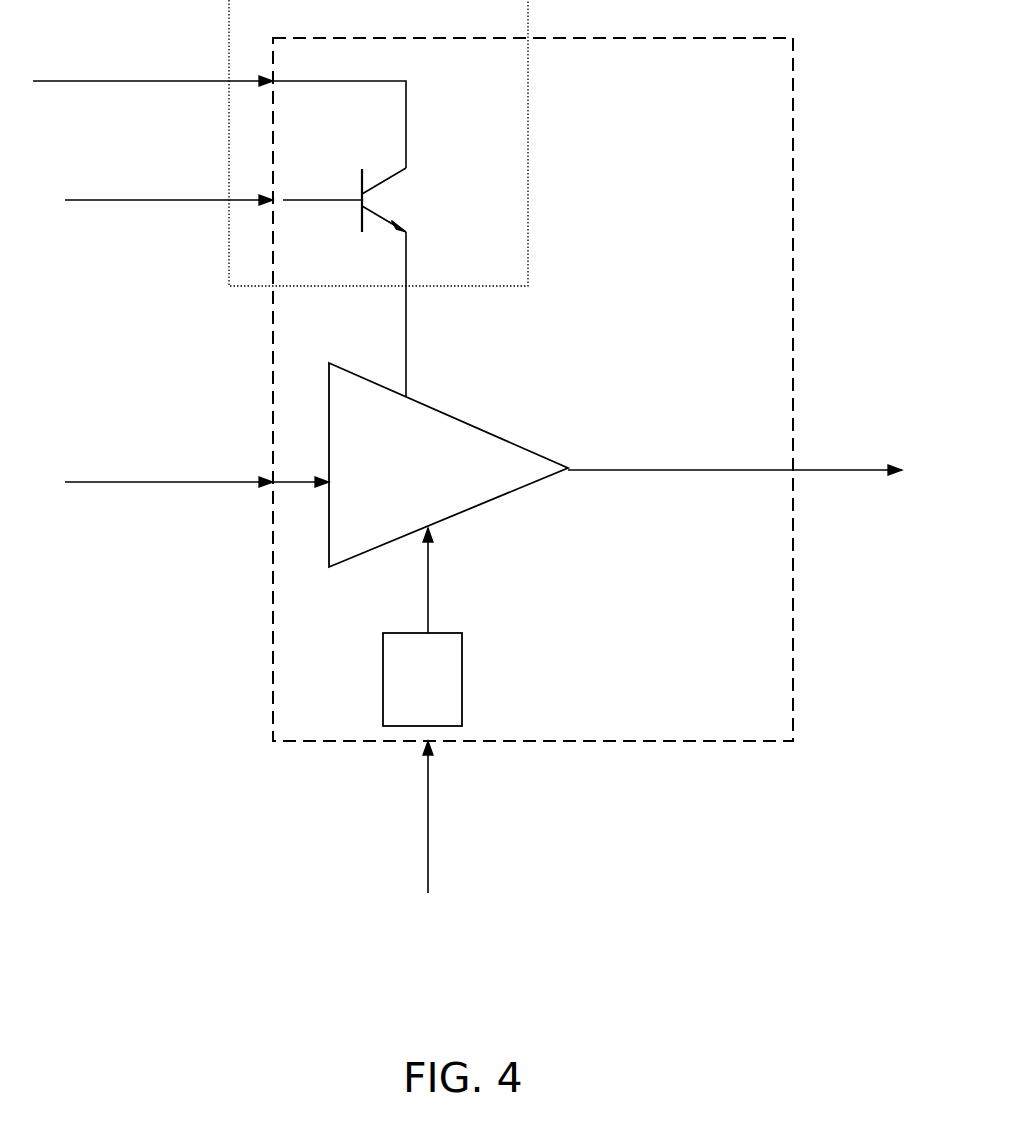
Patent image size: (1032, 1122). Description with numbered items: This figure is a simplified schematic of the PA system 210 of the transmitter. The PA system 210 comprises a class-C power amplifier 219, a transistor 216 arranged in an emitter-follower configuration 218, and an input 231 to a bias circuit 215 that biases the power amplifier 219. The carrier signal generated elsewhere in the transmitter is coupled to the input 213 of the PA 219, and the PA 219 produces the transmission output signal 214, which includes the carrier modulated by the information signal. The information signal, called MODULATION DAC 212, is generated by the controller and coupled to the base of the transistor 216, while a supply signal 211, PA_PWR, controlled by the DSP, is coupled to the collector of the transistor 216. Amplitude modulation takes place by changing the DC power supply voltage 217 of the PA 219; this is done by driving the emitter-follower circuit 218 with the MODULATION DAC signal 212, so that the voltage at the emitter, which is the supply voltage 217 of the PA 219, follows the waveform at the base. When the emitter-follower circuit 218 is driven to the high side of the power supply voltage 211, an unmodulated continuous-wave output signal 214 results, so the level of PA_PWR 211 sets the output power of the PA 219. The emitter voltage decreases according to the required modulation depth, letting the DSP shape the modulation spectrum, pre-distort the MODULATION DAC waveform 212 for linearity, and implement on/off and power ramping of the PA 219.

The PA system 210 is at (793, 96).
The supply signal PA_PWR 211 is at (141, 52).
The MODULATION DAC signal 212 is at (160, 167).
The input of the PA 213 is at (173, 452).
The transmission output signal 214 is at (880, 410).
The bias circuit 215 is at (462, 658).
The transistor 216 is at (450, 167).
The DC power supply voltage 217 is at (537, 355).
The emitter-follower configuration 218 is at (527, 20).
The class-C power amplifier 219 is at (508, 443).
The input to bias circuit 231 is at (428, 853).